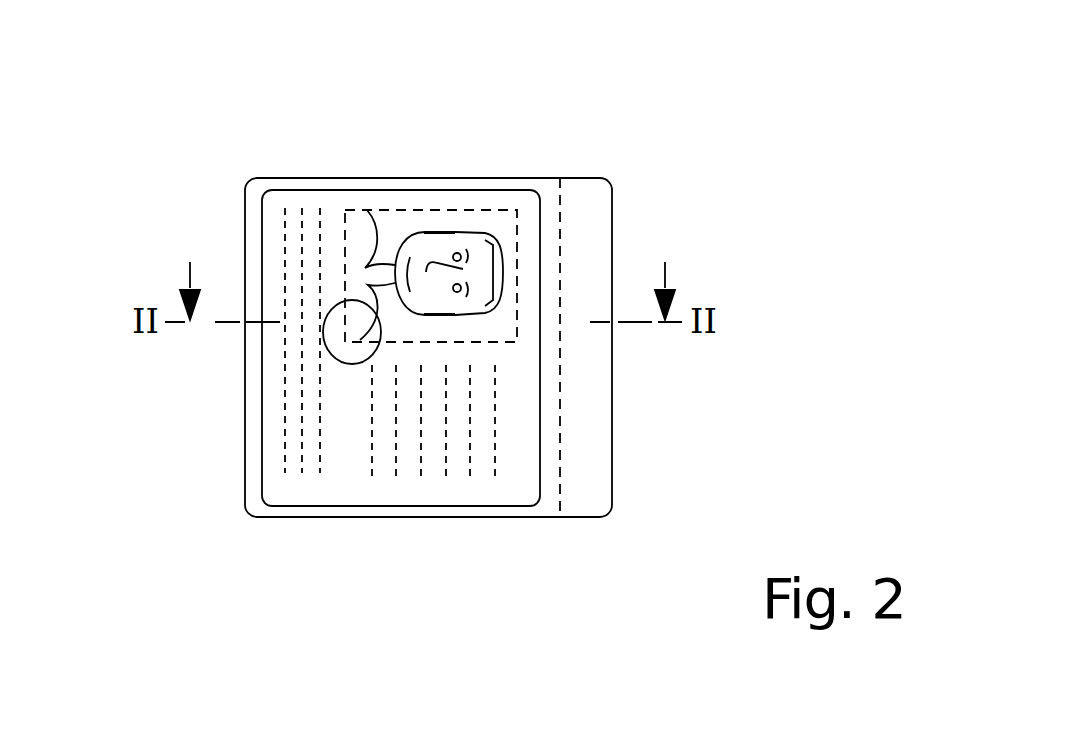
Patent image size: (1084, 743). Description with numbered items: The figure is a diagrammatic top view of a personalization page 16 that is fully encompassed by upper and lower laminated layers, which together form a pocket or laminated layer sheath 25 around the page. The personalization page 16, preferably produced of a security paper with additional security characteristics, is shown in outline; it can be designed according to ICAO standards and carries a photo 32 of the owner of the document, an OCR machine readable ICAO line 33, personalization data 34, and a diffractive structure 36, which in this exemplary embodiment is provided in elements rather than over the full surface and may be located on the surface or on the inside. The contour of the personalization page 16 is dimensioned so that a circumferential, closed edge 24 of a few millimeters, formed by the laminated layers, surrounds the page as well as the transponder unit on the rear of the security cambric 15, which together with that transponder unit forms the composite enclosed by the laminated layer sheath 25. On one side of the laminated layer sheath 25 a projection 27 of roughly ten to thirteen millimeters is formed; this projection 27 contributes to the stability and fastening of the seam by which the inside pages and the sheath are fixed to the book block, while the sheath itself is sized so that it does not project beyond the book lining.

The security cambric 15 is at (528, 135).
The personalization page 16 is at (372, 205).
The edge 24 is at (261, 378).
The laminated layer sheath 25 is at (230, 506).
The projection 27 is at (610, 528).
The photo 32 is at (447, 231).
The OCR machine readable ICAO line 33 is at (333, 207).
The personalization data 34 is at (498, 485).
The diffractive structure 36 is at (338, 302).